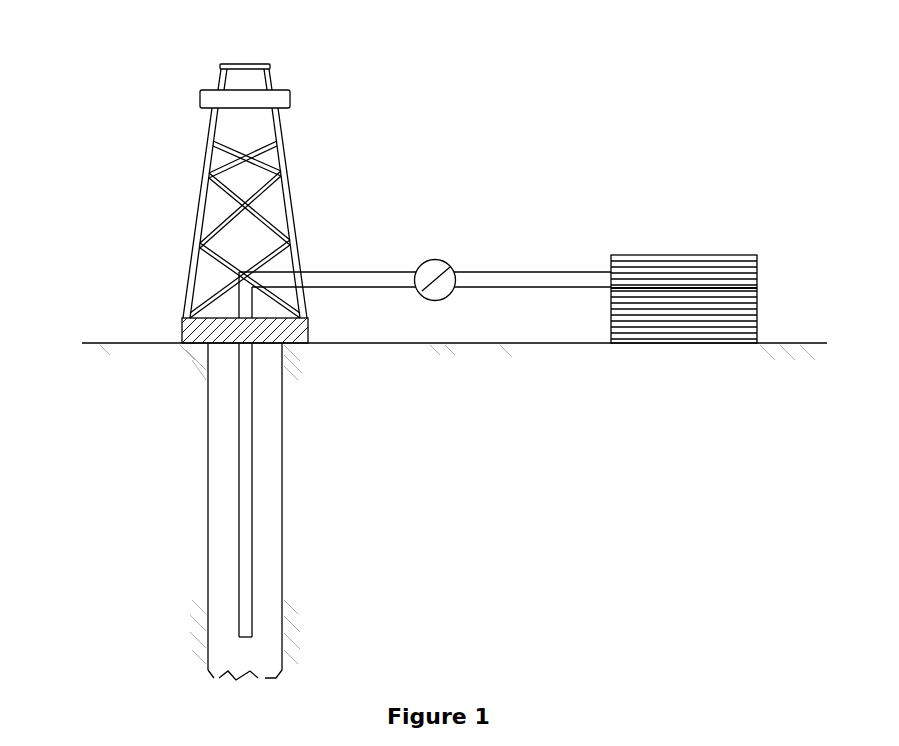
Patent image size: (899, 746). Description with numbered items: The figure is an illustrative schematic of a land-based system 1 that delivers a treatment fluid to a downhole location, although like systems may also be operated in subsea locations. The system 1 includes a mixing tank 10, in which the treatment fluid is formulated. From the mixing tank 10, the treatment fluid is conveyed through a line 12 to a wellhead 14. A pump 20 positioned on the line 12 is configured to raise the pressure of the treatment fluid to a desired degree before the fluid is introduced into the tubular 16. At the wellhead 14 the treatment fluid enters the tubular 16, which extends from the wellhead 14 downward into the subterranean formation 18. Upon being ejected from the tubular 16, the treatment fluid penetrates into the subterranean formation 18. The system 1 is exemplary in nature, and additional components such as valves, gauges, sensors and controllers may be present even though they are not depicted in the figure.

The system 1 is at (85, 95).
The mixing tank 10 is at (747, 253).
The line 12 is at (358, 272).
The wellhead 14 is at (180, 328).
The tubular 16 is at (253, 442).
The subterranean formation 18 is at (144, 520).
The pump 20 is at (437, 259).